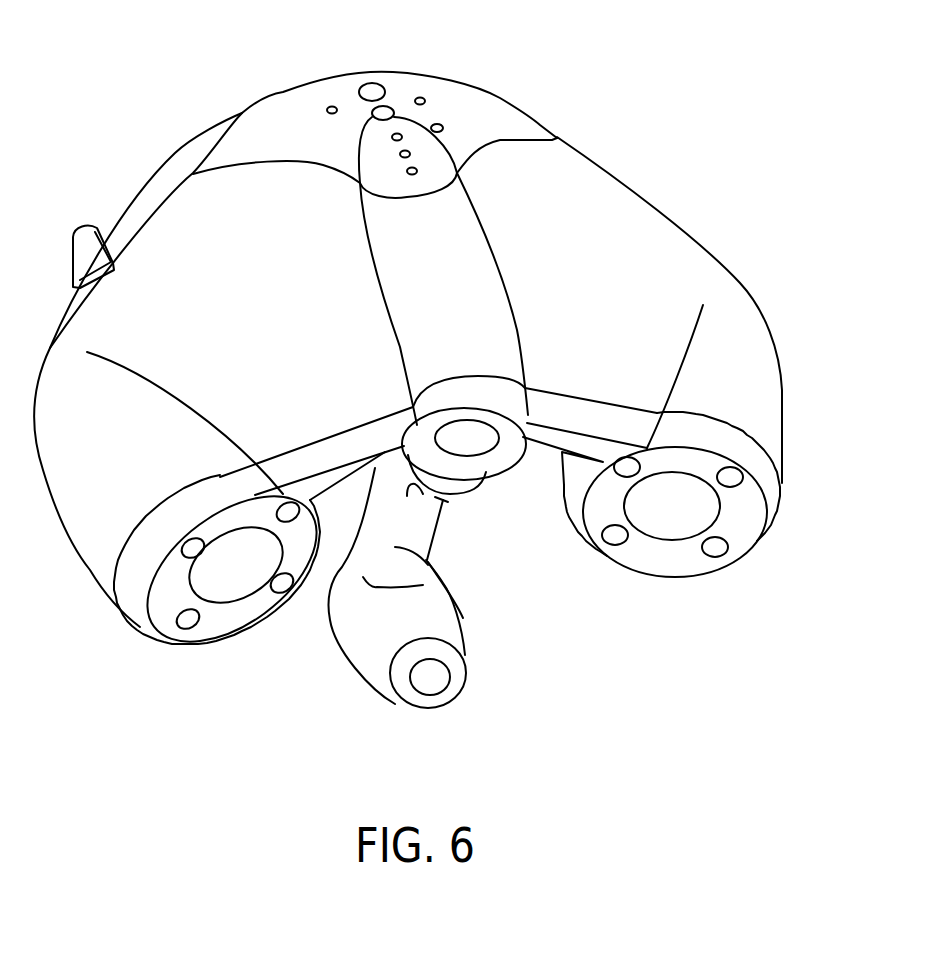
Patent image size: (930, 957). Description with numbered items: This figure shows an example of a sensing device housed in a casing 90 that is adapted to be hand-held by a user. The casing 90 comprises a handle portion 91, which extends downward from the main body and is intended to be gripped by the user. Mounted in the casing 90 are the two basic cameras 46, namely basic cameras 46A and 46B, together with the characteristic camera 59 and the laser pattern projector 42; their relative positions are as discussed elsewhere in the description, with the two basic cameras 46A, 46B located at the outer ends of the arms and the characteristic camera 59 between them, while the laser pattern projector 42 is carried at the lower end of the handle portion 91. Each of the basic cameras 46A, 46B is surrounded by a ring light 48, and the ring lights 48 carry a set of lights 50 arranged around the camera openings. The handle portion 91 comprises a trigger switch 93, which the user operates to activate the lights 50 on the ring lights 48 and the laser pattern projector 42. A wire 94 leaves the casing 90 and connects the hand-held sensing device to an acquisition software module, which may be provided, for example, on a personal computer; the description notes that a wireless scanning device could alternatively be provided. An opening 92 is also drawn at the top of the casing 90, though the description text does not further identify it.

The casing 90 is at (600, 203).
The opening in housing 92 is at (370, 90).
The wire 94 is at (90, 258).
The characteristic camera 59 is at (470, 440).
The trigger switch 93 is at (448, 505).
The handle portion 91 is at (457, 610).
The laser pattern projector 42 is at (436, 677).
The basic cameras 46 is at (444, 567).
The basic camera 46A is at (667, 528).
The basic camera 46B is at (227, 590).
The ring lights 48 is at (160, 604).
The lights 50 is at (285, 512).